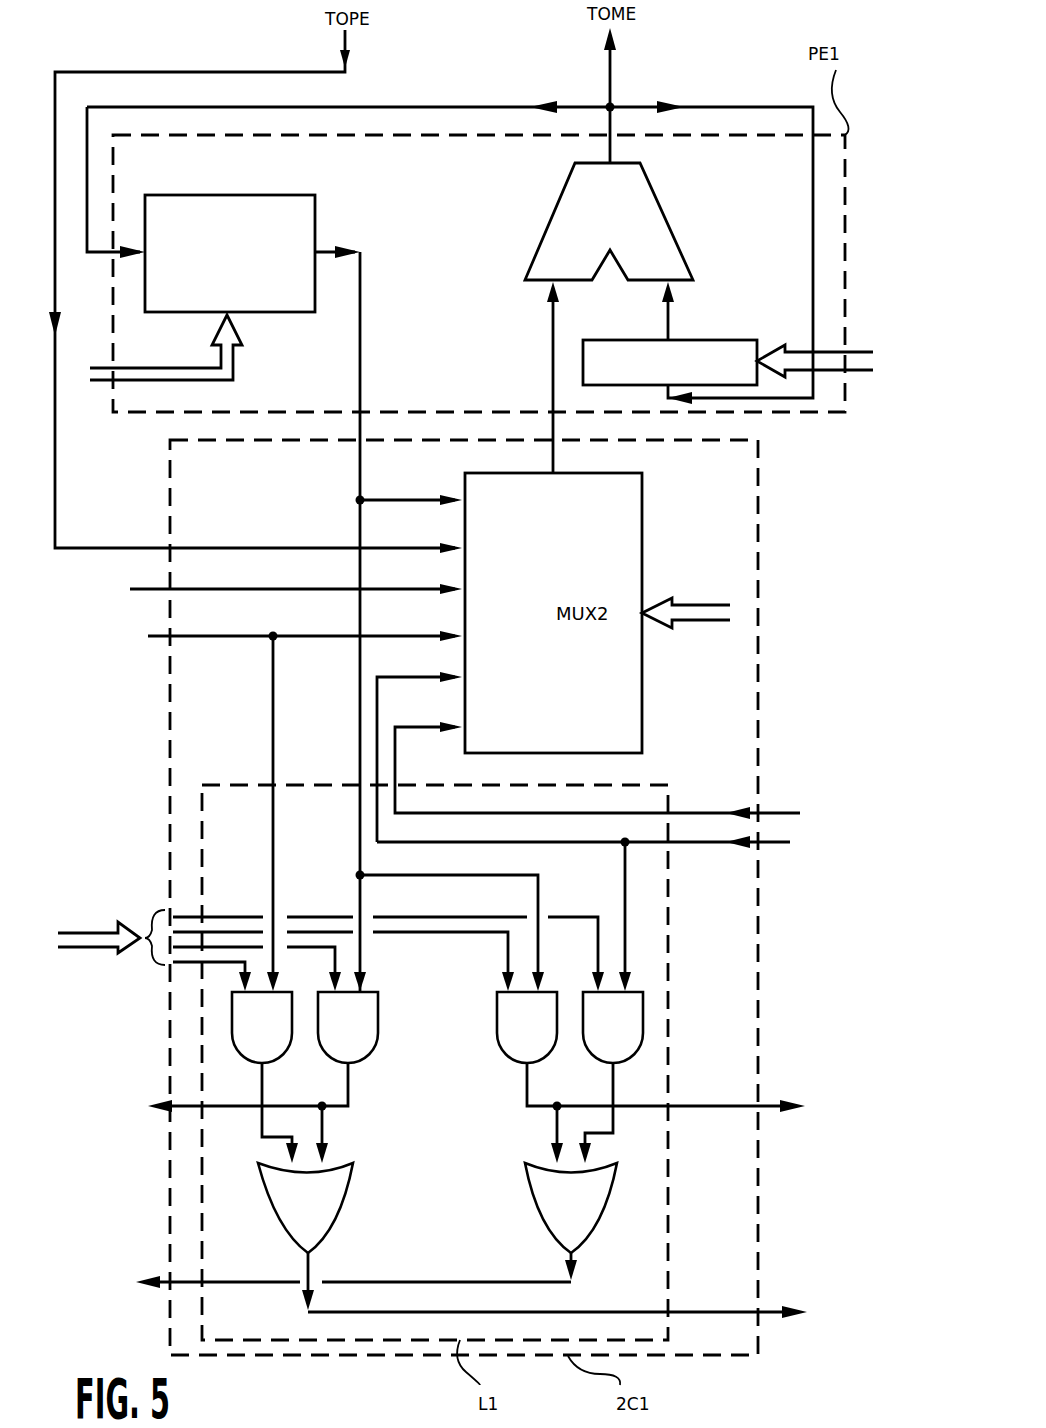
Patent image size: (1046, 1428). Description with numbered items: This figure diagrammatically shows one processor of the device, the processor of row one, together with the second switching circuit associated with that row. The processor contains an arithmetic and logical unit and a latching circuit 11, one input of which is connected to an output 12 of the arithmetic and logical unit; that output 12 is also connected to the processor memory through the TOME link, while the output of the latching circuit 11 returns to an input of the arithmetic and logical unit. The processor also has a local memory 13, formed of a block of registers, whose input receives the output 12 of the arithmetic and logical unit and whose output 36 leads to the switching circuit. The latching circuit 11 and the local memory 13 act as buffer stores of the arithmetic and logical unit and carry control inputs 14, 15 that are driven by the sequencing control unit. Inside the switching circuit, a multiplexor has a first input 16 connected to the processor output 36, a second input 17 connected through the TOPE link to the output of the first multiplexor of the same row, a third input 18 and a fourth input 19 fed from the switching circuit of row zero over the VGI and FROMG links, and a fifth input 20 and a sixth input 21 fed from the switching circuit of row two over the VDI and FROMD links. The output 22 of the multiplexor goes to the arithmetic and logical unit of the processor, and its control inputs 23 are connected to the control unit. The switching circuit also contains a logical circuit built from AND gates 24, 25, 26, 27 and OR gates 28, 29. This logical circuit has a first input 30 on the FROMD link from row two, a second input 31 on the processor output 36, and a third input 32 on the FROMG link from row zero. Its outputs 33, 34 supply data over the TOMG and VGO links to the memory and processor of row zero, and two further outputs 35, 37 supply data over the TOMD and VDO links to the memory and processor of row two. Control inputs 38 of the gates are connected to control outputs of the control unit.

The latching circuit 11 is at (730, 345).
The output of the unit ALU 12 is at (612, 150).
The local memory 13 is at (300, 200).
The control input 14 is at (760, 365).
The control input 15 is at (233, 362).
The first input 16 is at (428, 502).
The second input 17 is at (470, 547).
The third input 18 is at (287, 590).
The fourth input 19 is at (282, 637).
The fifth input 20 is at (438, 752).
The sixth input 21 is at (623, 764).
The output of the multiplexor 22 is at (553, 470).
The control inputs of the multiplexor 23 is at (647, 617).
The logical gate of the AND type 24 is at (245, 1012).
The logical gate of the AND type 25 is at (372, 1003).
The logical gate of the AND type 26 is at (512, 1045).
The logical gate of the AND type 27 is at (633, 1003).
The logical gate of the OR type 28 is at (330, 1190).
The logical gate of the OR type 29 is at (542, 1208).
The first input 30 is at (715, 845).
The second input 31 is at (362, 742).
The third input 32 is at (273, 692).
The output of the logical circuit 33 is at (185, 1110).
The output of the logical circuit 34 is at (184, 1280).
The output 35 is at (700, 1108).
The output of the processor 36 is at (362, 305).
The output 37 is at (730, 1310).
The control inputs 38 is at (331, 918).